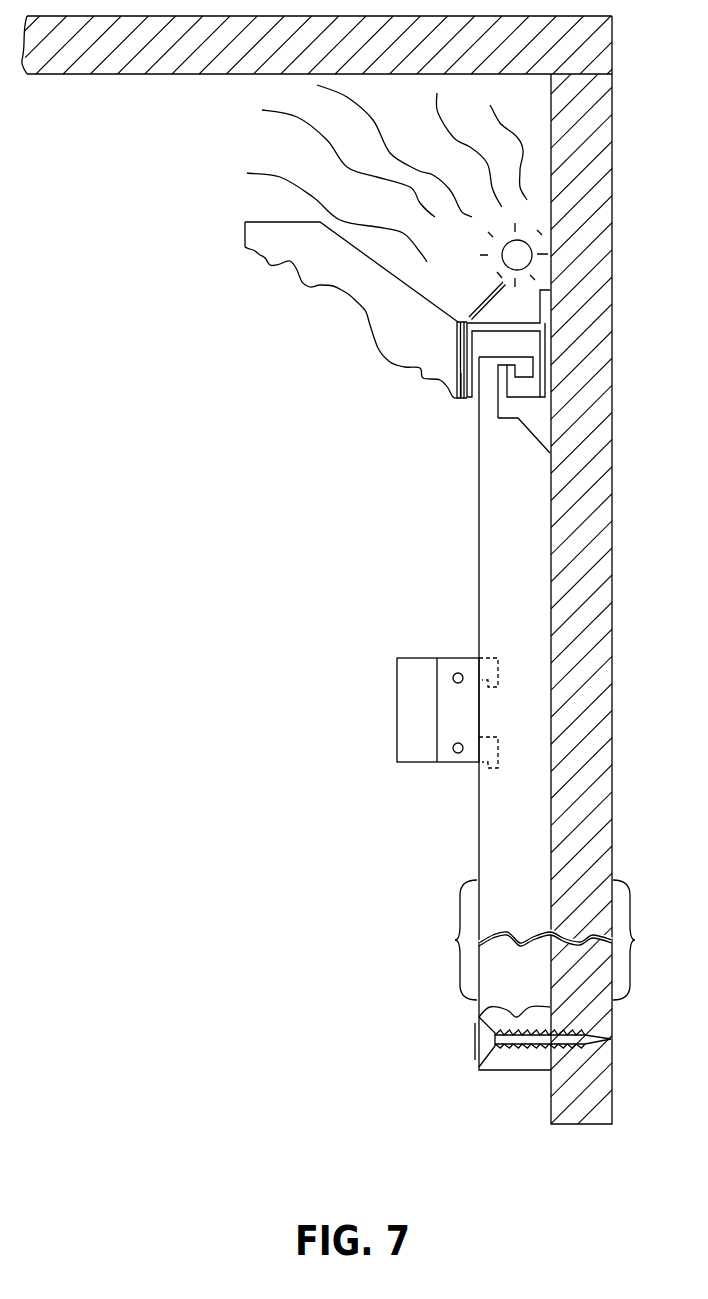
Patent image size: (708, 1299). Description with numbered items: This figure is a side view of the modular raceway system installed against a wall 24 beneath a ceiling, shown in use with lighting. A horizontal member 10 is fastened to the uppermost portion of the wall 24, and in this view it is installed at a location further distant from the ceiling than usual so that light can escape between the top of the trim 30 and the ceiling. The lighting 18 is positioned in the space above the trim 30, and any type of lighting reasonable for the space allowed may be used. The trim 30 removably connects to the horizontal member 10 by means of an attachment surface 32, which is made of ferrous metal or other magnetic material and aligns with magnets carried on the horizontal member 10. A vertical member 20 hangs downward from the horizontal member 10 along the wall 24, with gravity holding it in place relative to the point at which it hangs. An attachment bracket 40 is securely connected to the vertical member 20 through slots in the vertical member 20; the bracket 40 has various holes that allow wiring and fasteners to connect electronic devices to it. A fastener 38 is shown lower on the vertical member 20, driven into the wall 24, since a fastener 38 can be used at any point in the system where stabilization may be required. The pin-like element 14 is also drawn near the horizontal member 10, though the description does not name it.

The horizontal member 10 is at (518, 322).
The fastener pin 14 is at (483, 308).
The lighting 18 is at (515, 253).
The vertical member 20 is at (495, 558).
The wall 24 is at (590, 355).
The trim 30 is at (365, 285).
The attachment surface 32 is at (460, 373).
The fastener 38 is at (537, 1052).
The attachment bracket 40 is at (410, 703).